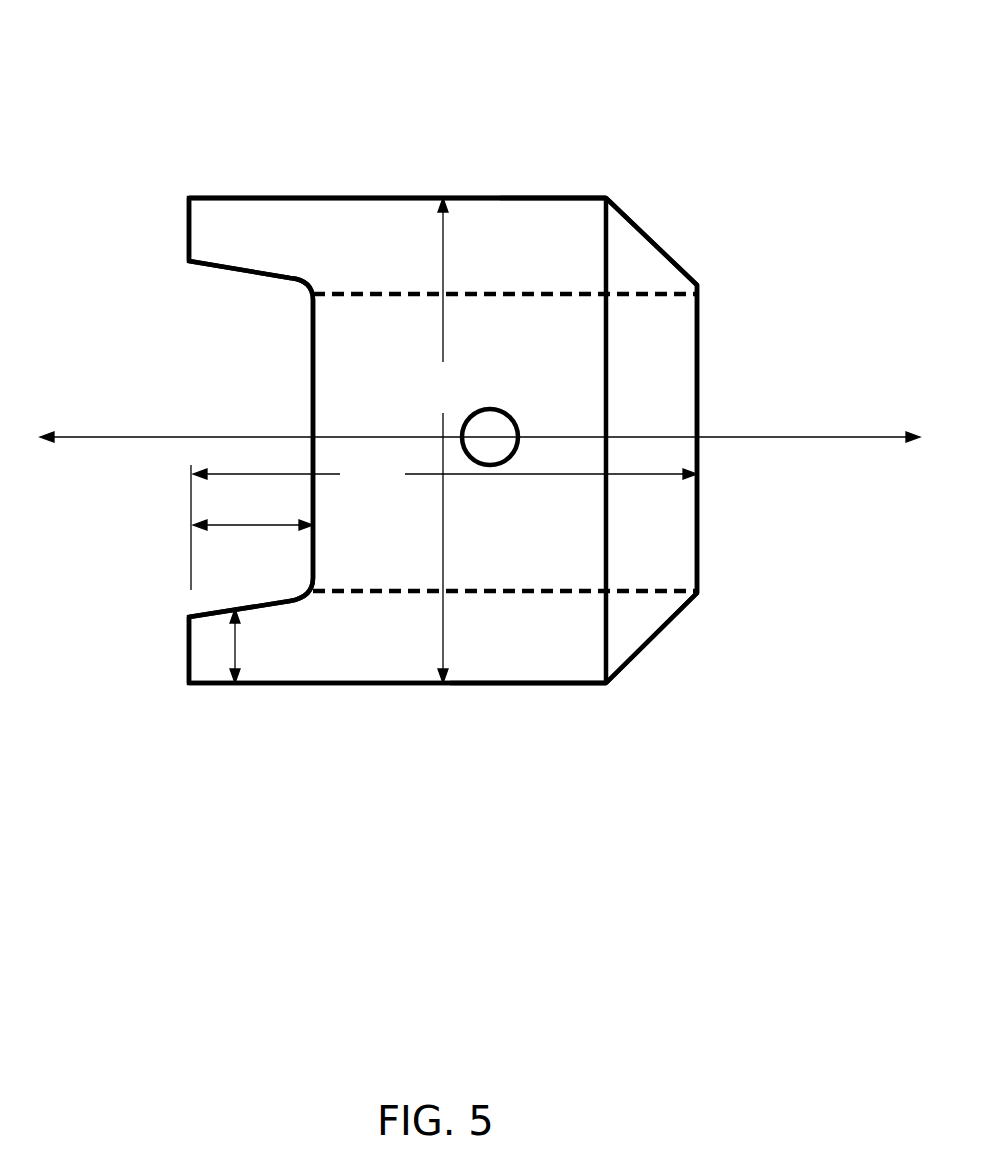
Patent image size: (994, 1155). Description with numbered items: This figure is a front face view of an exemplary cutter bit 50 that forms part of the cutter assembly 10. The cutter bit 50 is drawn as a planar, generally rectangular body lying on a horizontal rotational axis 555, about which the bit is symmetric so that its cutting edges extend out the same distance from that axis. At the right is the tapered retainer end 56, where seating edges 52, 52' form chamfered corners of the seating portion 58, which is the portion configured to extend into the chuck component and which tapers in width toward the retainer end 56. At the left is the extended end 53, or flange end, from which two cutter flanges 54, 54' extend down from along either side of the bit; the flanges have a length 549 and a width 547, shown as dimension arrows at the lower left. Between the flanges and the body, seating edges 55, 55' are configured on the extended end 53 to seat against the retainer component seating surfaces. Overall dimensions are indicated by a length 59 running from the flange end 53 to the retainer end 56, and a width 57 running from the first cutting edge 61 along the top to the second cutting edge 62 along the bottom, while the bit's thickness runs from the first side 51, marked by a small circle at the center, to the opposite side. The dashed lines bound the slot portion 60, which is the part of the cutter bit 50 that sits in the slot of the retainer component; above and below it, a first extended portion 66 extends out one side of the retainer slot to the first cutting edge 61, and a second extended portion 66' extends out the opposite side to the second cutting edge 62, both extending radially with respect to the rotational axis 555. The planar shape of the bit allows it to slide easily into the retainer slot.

The cutter assembly 10 is at (531, 114).
The cutter bit 50 is at (495, 218).
The first side 51 is at (480, 425).
The seating edge 52 is at (689, 219).
The seating edge 52' is at (711, 649).
The extended end 53 is at (188, 252).
The cutter flange 54 is at (109, 229).
The cutter flange 54' is at (107, 650).
The seating edge 55 is at (219, 429).
The seating edge 55' is at (183, 598).
The retainer end 56 is at (698, 333).
The width 57 is at (452, 440).
The seating portion 58 is at (667, 463).
The length 59 is at (445, 479).
The slot portion 60 is at (630, 296).
The first cutting edge 61 is at (397, 197).
The second cutting edge 62 is at (425, 685).
The first extended portion 66 is at (580, 165).
The second extended portion 66' is at (528, 716).
The flange width 547 is at (237, 643).
The flange length 549 is at (248, 520).
The rotational axis 555 is at (787, 440).